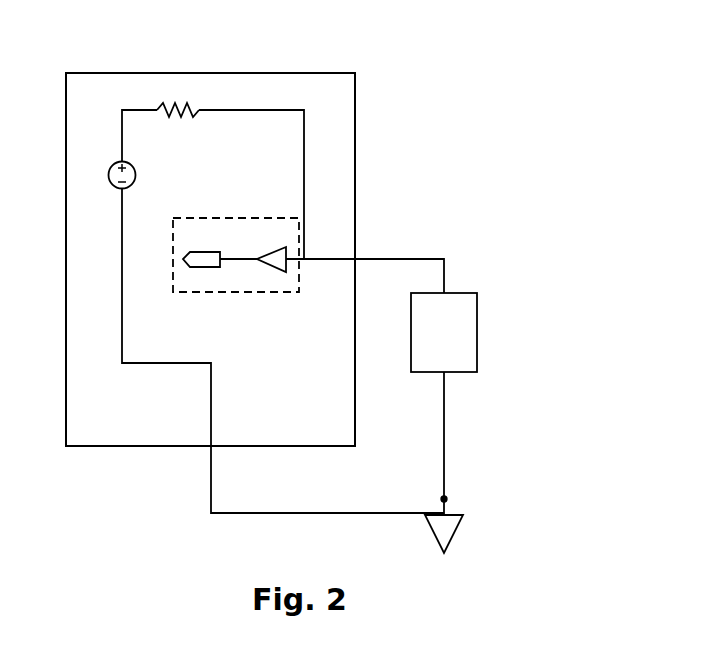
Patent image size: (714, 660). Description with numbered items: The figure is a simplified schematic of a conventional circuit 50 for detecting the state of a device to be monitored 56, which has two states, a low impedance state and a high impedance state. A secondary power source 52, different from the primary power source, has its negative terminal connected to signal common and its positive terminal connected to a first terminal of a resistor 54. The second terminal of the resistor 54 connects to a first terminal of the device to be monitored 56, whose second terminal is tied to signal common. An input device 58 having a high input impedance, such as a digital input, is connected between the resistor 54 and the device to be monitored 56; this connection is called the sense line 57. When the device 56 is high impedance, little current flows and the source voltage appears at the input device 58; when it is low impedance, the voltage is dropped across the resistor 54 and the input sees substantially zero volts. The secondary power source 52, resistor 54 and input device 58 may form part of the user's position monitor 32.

The user's position monitor 32 is at (131, 72).
The circuit 50 is at (438, 125).
The secondary power source 52 is at (116, 188).
The resistor 54 is at (162, 109).
The device to be monitored 56 is at (478, 357).
The sense line 57 is at (391, 246).
The input device 58 is at (262, 218).